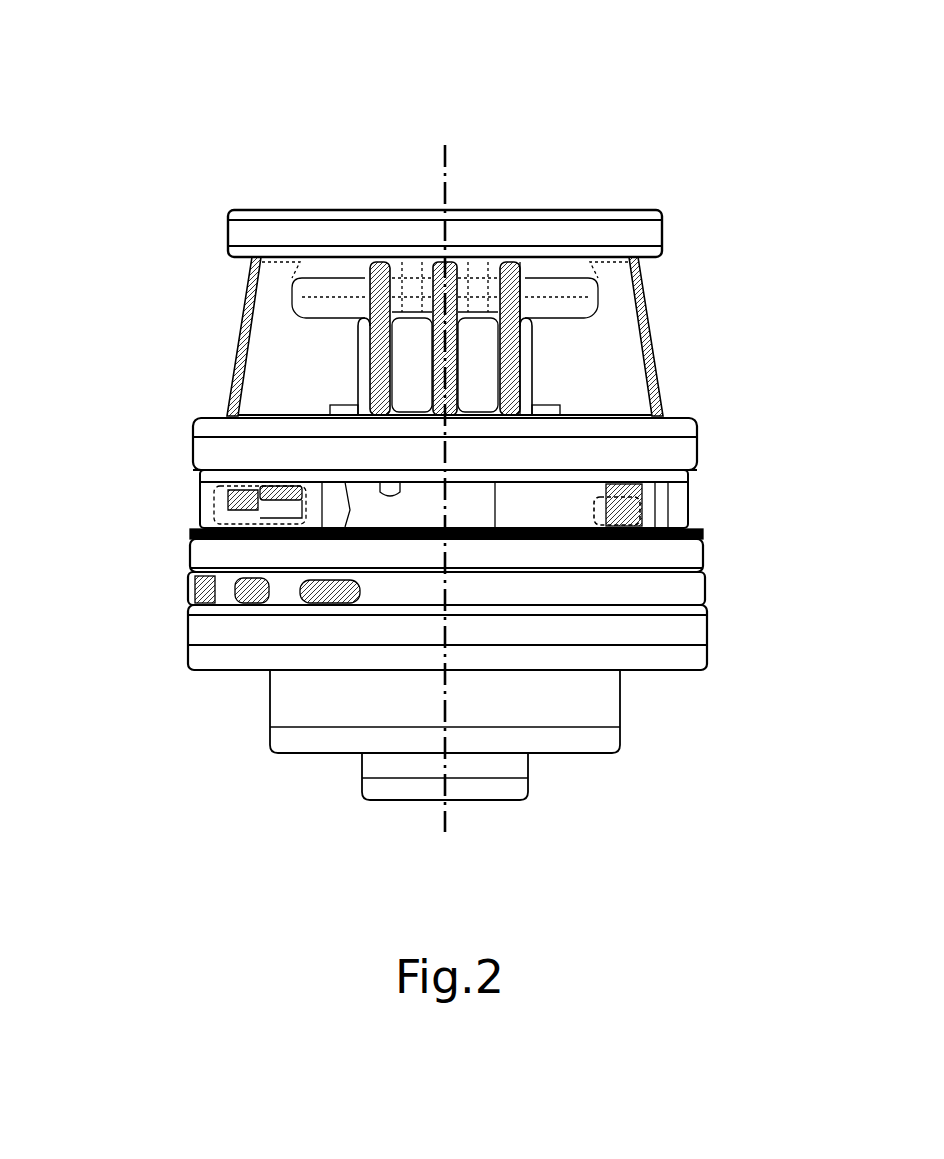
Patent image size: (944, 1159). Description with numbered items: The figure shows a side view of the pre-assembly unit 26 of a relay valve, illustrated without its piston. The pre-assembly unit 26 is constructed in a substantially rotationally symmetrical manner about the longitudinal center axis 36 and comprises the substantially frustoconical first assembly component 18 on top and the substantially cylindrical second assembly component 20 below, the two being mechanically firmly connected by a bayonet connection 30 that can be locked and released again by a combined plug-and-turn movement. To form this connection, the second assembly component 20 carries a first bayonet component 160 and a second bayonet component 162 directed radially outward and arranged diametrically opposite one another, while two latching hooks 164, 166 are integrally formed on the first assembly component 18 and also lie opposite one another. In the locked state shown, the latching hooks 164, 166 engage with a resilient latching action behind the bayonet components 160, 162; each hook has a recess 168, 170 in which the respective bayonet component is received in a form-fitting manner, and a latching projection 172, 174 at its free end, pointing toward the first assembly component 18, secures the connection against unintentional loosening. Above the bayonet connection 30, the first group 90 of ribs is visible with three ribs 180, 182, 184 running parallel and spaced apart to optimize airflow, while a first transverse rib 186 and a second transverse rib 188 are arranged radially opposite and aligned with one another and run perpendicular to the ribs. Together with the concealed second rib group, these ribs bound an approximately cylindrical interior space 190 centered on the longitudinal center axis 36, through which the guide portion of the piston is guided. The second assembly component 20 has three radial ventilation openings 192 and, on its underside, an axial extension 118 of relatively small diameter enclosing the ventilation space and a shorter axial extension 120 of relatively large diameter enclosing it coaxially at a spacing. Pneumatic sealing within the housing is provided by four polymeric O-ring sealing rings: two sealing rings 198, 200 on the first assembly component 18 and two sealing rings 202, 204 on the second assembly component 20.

The pre-assembly unit 26 is at (228, 124).
The longitudinal center axis 36 is at (440, 158).
The first assembly component 18 is at (172, 352).
The second assembly component 20 is at (195, 655).
The bayonet connection 30 is at (166, 472).
The first group of ribs 90 is at (340, 345).
The axial extension of relatively small diameter 118 is at (360, 768).
The axial extension of relatively large diameter 120 is at (625, 698).
The first bayonet component 160 is at (292, 487).
The second bayonet component 162 is at (632, 500).
The latching hook 164 is at (207, 510).
The latching hook 166 is at (690, 497).
The recess 168 is at (240, 507).
The recess 170 is at (640, 516).
The latching projection 172 is at (307, 542).
The latching projection 174 is at (590, 512).
The rib 180 is at (372, 290).
The rib 182 is at (460, 275).
The rib 184 is at (508, 322).
The first transverse rib 186 is at (308, 383).
The second transverse rib 188 is at (612, 383).
The interior space 190 is at (428, 369).
The radial ventilation openings 192 is at (230, 586).
The sealing ring 198 is at (662, 232).
The sealing ring 200 is at (697, 447).
The sealing ring 202 is at (703, 548).
The sealing ring 204 is at (678, 633).